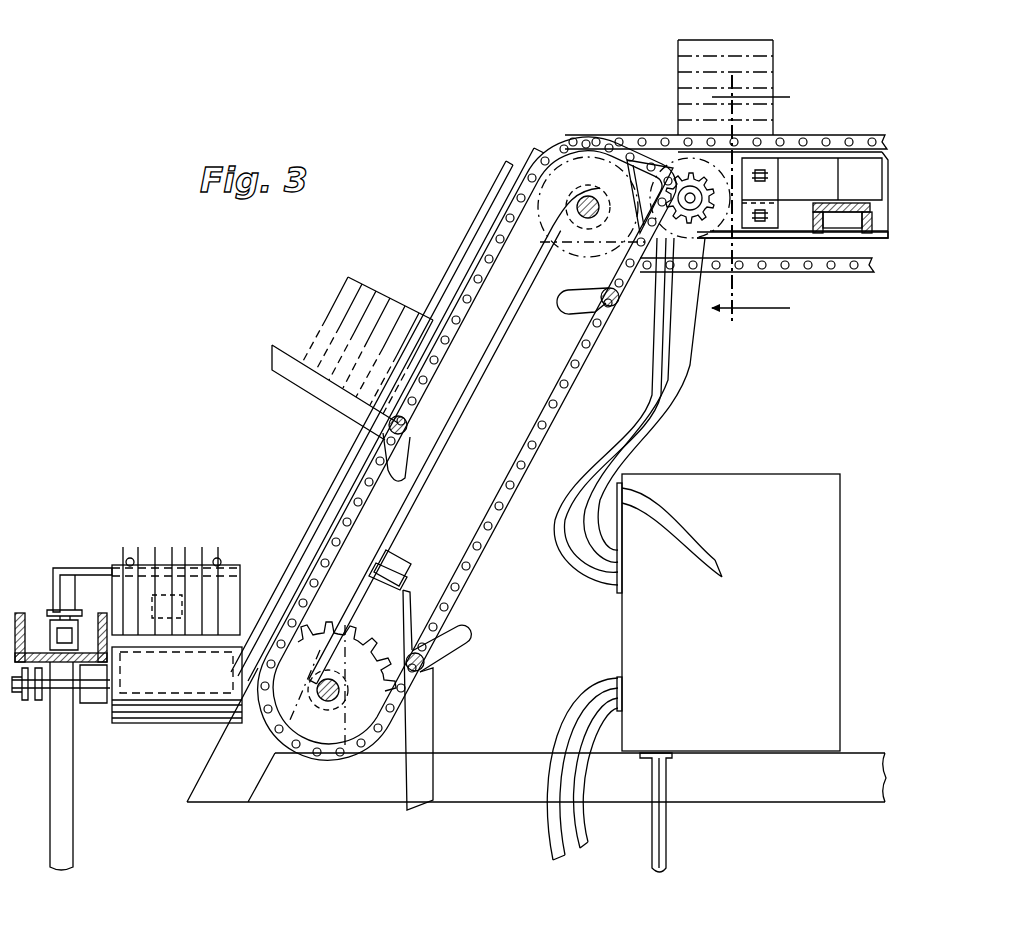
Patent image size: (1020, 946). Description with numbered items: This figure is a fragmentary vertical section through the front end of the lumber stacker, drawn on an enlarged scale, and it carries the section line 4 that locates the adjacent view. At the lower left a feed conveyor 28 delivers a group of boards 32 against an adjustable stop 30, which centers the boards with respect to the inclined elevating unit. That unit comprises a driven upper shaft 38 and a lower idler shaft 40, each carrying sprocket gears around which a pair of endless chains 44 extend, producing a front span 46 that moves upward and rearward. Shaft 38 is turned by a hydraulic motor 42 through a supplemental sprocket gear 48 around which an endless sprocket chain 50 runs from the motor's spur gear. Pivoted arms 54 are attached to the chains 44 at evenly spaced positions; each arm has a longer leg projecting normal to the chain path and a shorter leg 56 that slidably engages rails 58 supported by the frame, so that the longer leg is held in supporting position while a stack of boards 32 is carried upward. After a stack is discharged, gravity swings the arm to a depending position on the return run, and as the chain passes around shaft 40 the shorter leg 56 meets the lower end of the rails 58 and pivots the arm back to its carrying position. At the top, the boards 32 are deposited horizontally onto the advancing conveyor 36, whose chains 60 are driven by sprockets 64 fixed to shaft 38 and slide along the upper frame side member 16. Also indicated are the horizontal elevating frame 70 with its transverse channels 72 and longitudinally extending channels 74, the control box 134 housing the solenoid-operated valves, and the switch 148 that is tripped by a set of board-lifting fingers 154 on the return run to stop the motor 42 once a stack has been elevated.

The section line 4- 4 is at (760, 200).
The upper frame side member 16 is at (797, 274).
The feed conveyor 28 is at (165, 742).
The adjustable stop 30 is at (97, 566).
The boards 32 is at (770, 38).
The advancing conveyor 36 is at (840, 128).
The shaft 38 is at (596, 200).
The shaft 40 is at (338, 698).
The hydraulic motor 42 is at (755, 135).
The endless chains 44 is at (540, 440).
The front span 46 is at (345, 516).
The supplemental sprocket gear 48 is at (566, 138).
The endless sprocket chain 50 is at (672, 165).
The pivoted arms 54 is at (340, 408).
The shorter leg 56 is at (405, 456).
The rails 58 is at (402, 515).
The chains 60 is at (650, 136).
The sprockets 64 is at (695, 312).
The horizontal elevating frame 70 is at (843, 216).
The transverse channels 72 is at (808, 212).
The longitudinally extending channels 74 is at (885, 152).
The control box 134 is at (740, 668).
The switch 148 is at (407, 556).
The board-lifting fingers 154 is at (790, 224).